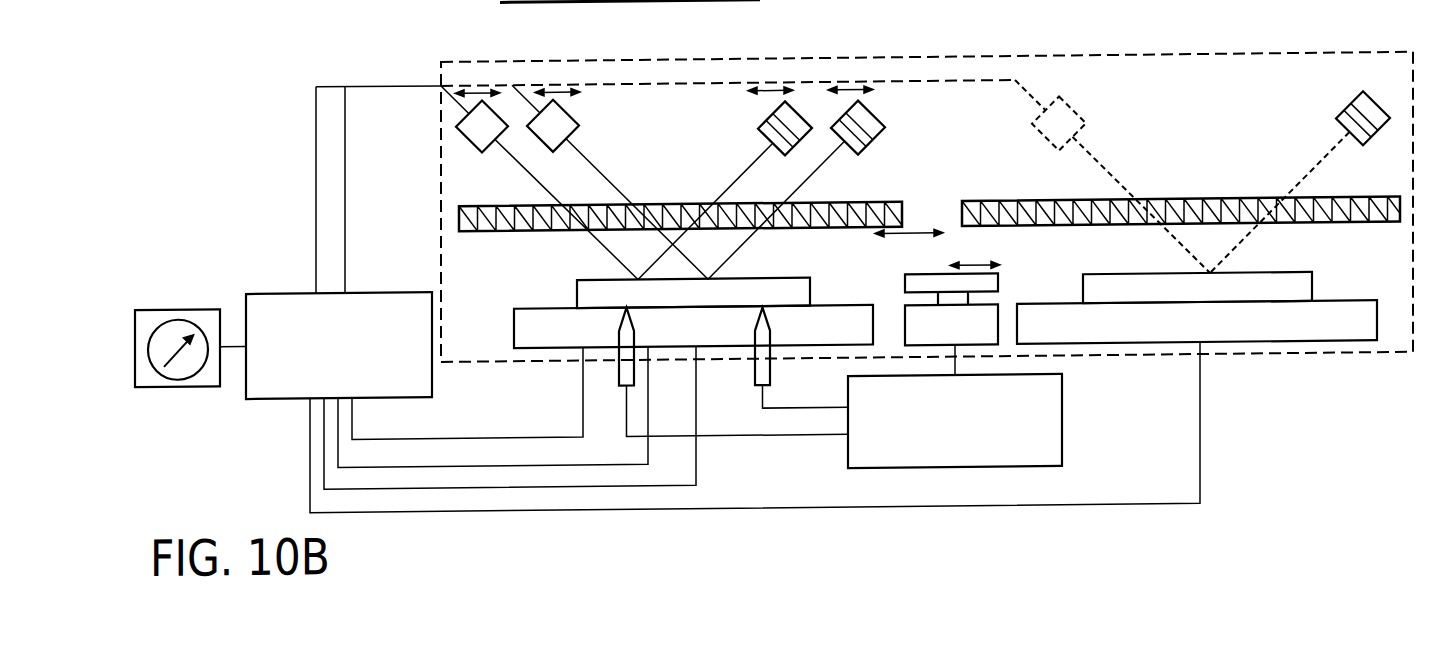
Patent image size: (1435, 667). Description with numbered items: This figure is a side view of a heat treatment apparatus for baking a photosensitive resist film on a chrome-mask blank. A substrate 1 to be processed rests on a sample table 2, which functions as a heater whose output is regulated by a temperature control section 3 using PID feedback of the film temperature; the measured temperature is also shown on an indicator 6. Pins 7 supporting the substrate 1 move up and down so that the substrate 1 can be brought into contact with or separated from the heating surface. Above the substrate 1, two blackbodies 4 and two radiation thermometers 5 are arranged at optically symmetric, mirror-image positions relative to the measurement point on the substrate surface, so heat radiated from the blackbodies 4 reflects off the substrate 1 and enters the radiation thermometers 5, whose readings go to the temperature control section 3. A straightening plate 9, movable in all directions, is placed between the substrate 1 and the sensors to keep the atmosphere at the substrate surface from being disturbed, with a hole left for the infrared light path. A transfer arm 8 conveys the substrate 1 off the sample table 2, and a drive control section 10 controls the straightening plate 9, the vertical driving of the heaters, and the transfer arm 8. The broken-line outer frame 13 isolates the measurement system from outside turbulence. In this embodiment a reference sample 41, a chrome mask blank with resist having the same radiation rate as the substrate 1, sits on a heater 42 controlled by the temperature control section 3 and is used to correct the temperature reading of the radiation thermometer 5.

The substrate to be processed 1 is at (795, 281).
The sample table 2 is at (848, 310).
The temperature control section 3 is at (383, 292).
The blackbody 4 is at (760, 132).
The radiation thermometer 5 is at (473, 151).
The indicator 6 is at (169, 307).
The pin 7 is at (619, 387).
The transfer arm 8 is at (923, 279).
The straightening plate 9 is at (902, 212).
The drive control section 10 is at (1062, 448).
The outer frame 13 is at (1336, 62).
The reference sample 41 is at (1287, 281).
The heater 42 is at (1350, 310).